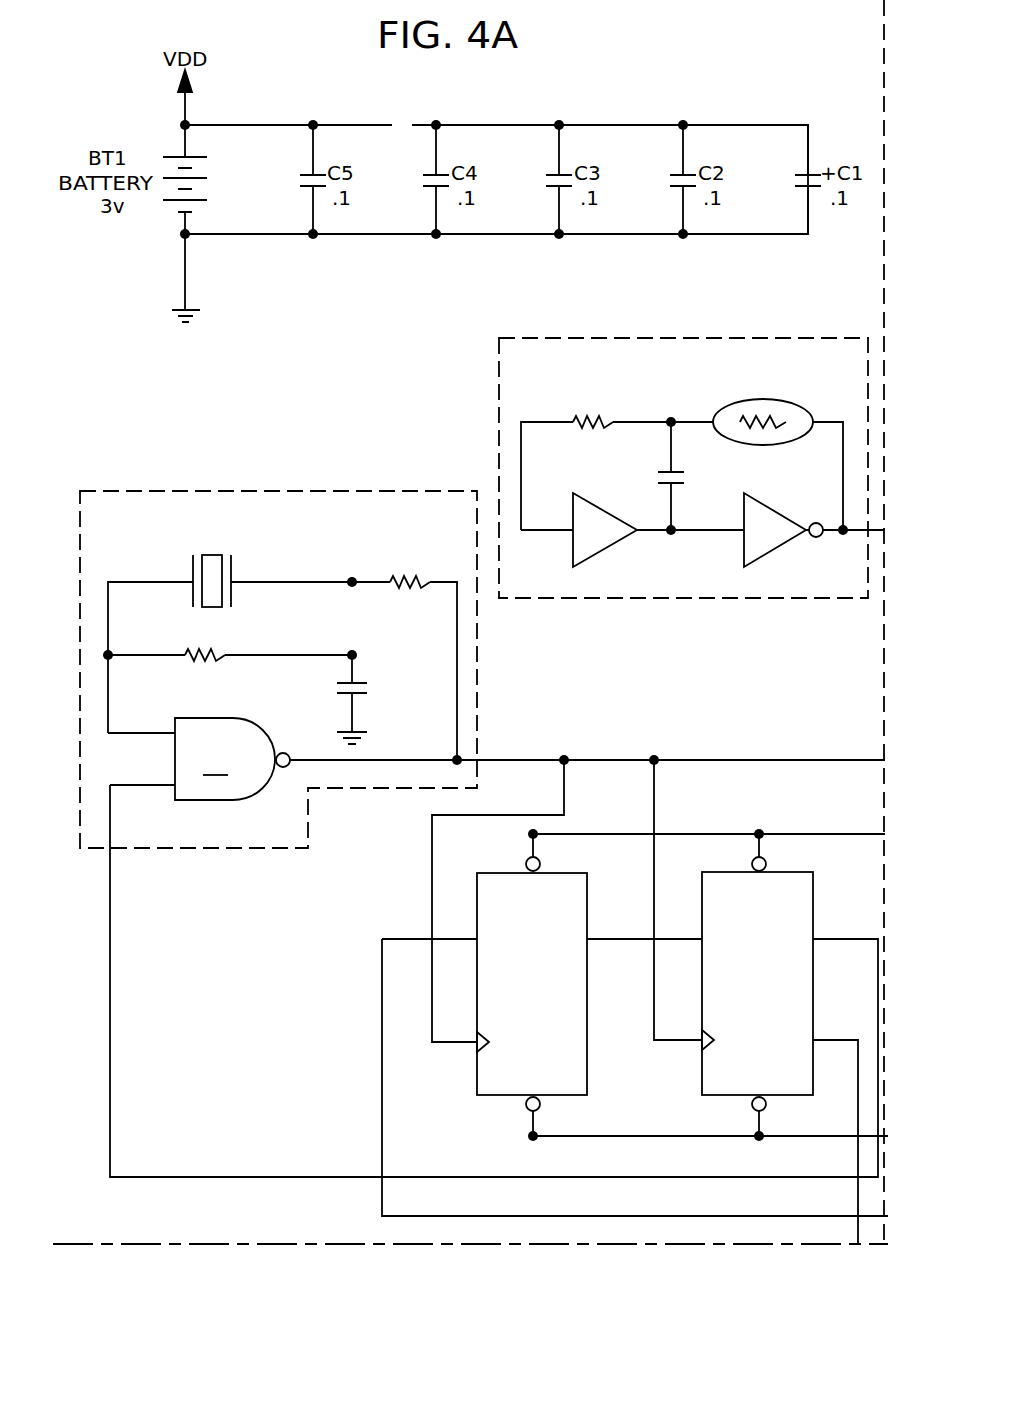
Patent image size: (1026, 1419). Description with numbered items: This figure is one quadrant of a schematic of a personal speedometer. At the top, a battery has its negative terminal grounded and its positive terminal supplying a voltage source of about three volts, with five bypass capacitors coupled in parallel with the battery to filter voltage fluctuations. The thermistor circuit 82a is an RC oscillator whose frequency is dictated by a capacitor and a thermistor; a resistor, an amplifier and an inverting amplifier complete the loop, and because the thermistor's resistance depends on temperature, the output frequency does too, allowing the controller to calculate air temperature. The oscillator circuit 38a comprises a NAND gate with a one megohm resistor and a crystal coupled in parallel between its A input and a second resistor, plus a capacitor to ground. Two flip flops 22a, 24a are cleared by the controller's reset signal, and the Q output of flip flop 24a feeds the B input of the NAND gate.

The thermistor circuit 82a is at (543, 337).
The oscillator circuit 38a is at (277, 490).
The flip flop 22a is at (549, 963).
The flip flop 24a is at (776, 963).